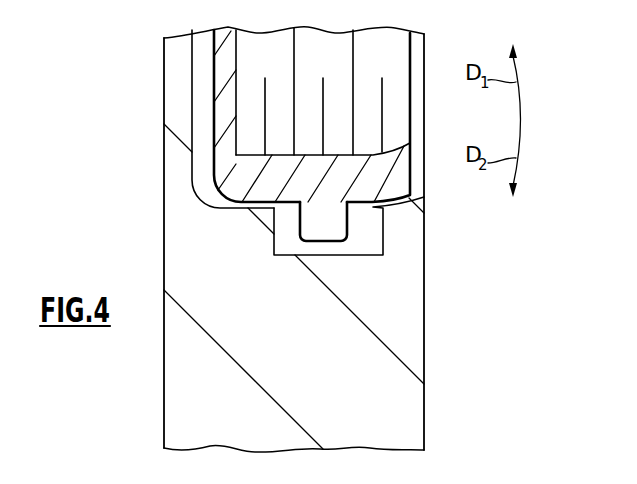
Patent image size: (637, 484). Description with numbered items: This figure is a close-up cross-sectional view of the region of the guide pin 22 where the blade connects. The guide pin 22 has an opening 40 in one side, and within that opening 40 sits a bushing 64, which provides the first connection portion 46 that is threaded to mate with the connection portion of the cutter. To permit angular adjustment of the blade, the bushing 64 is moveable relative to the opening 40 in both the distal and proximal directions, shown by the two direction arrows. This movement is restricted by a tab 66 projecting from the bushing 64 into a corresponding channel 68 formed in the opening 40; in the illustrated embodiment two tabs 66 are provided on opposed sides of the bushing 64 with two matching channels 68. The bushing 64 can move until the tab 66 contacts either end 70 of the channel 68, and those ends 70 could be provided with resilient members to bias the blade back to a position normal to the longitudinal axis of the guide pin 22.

The guide pin 22 is at (424, 413).
The opening 40 is at (438, 107).
The first connection portion 46 is at (293, 57).
The bushing 64 is at (241, 176).
The tab 66 is at (327, 236).
The channel 68 is at (360, 240).
The end of the channel 70 is at (286, 240).